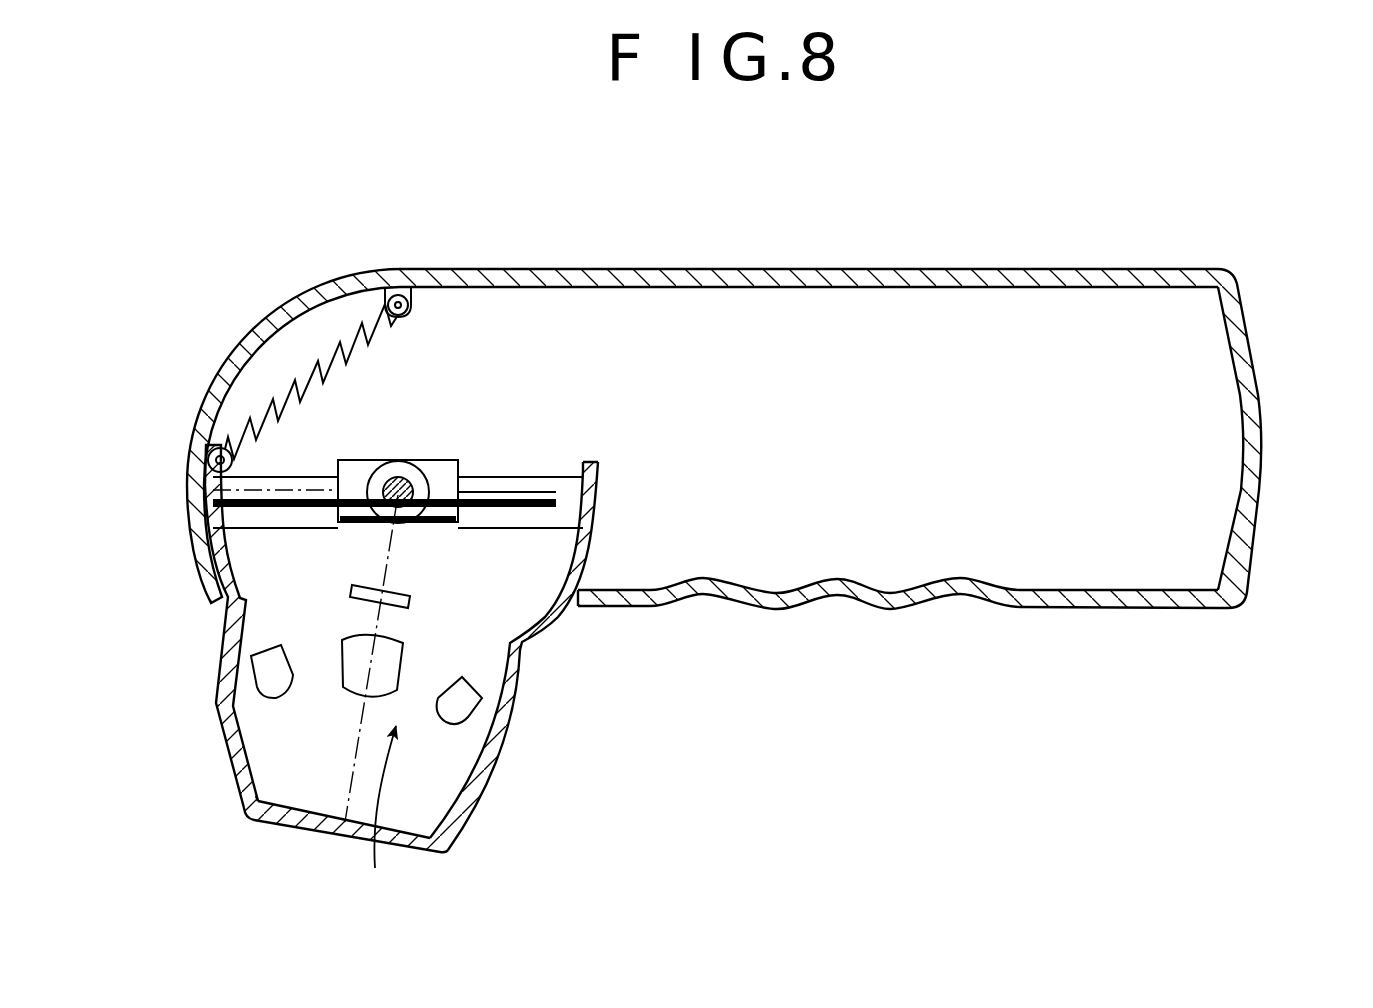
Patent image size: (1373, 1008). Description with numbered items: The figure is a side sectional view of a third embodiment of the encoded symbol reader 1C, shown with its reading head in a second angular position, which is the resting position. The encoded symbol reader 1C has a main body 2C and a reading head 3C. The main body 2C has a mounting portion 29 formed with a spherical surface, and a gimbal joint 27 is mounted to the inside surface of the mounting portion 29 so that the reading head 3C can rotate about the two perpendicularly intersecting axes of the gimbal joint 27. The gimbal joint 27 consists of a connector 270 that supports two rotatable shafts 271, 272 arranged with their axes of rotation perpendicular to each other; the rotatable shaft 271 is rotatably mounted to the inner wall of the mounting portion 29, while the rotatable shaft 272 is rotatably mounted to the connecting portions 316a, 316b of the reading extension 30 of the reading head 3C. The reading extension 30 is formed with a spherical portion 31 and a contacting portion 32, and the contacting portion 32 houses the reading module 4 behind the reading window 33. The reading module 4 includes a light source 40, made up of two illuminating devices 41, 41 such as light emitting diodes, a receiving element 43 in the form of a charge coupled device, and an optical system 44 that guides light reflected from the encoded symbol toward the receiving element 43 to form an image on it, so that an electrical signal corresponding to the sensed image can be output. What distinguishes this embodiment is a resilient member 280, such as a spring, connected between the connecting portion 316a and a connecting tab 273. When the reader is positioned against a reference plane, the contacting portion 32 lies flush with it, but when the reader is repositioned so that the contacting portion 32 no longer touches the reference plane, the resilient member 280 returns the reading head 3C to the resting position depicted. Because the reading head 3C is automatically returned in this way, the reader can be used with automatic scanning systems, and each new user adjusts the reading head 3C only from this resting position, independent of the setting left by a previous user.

The encoded symbol reader 1C is at (773, 382).
The main body 2C is at (1266, 366).
The reading head 3C is at (413, 667).
The reading module 4 is at (365, 647).
The gimbal joint 27 is at (403, 607).
The mounting portion 29 is at (308, 292).
The reading extension 30 is at (228, 773).
The spherical portion 31 is at (592, 546).
The contacting portion 32 is at (248, 810).
The reading window 33 is at (291, 824).
The light source 40 is at (373, 815).
The illuminating devices 41 is at (267, 687).
The receiving element 43 is at (365, 585).
The optical system 44 is at (350, 680).
The connector 270 is at (442, 462).
The rotatable shaft 271 is at (397, 478).
The rotatable shaft 272 is at (560, 501).
The connecting tab 273 is at (436, 290).
The resilient member 280 is at (345, 345).
The connecting portion 316a is at (212, 482).
The connecting portion 316b is at (600, 465).